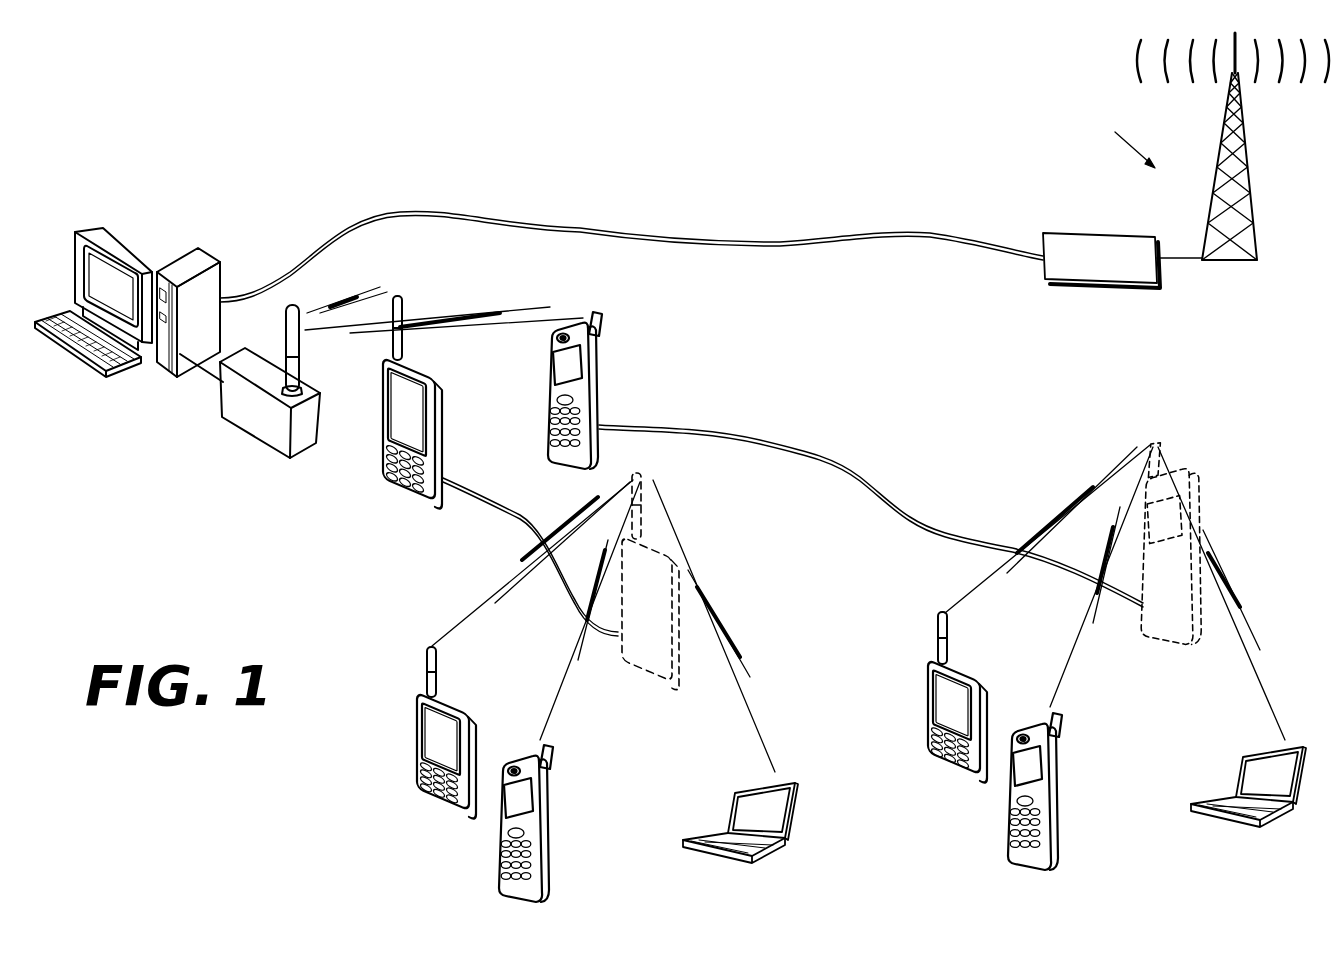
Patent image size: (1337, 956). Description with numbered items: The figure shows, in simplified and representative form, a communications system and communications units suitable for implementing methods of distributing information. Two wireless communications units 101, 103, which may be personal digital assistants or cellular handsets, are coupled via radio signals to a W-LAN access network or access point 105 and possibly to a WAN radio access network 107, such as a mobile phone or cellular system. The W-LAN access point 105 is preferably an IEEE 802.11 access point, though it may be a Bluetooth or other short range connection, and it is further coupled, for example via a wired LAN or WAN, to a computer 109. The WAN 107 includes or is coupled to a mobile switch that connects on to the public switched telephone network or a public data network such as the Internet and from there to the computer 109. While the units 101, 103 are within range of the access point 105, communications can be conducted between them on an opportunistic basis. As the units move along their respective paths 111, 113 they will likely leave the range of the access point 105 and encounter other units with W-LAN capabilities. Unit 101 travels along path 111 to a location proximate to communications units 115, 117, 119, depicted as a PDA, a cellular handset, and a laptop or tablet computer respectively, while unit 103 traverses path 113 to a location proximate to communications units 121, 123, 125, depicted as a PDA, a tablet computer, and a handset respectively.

The wireless communications unit 101 is at (393, 401).
The wireless communications unit 103 is at (599, 372).
The W-LAN access point 105 is at (254, 431).
The WAN radio access network 107 is at (1193, 287).
The computer 109 is at (195, 260).
The path 111 is at (509, 504).
The path 113 is at (910, 516).
The communications unit 115 is at (426, 730).
The communications unit 117 is at (550, 797).
The communications unit 119 is at (746, 810).
The communications unit 121 is at (938, 700).
The communications unit 123 is at (1250, 774).
The communications unit 125 is at (1062, 770).